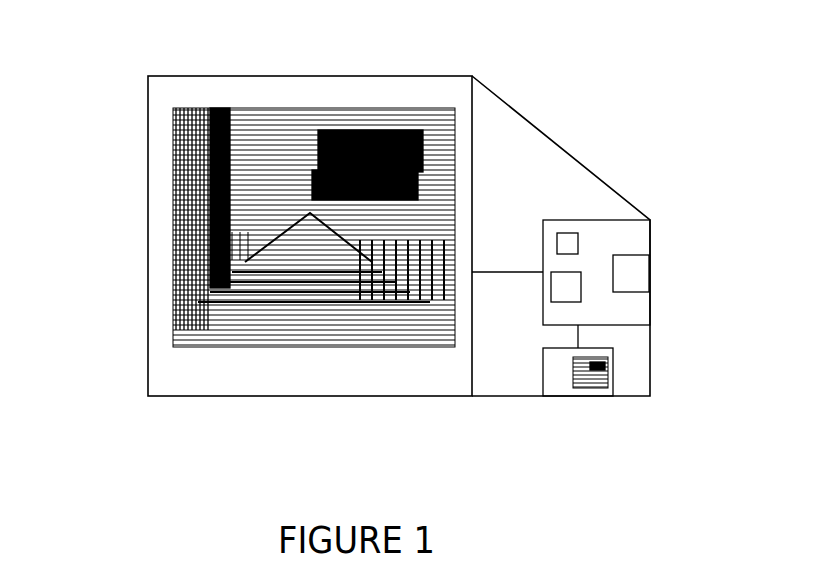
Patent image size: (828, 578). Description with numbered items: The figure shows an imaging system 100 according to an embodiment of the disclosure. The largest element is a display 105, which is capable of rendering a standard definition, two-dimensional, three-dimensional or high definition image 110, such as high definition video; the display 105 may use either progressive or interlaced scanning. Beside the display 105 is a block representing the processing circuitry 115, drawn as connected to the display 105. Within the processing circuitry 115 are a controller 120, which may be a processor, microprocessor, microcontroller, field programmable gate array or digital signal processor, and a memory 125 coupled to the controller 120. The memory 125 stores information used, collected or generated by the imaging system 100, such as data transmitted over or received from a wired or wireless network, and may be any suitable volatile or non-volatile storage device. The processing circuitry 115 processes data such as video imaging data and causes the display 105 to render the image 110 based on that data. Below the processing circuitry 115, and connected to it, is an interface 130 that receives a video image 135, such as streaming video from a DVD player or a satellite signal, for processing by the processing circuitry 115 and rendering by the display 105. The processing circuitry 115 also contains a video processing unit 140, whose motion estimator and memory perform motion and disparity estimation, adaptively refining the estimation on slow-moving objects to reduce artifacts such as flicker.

The imaging system 100 is at (131, 73).
The display 105 is at (145, 379).
The high definition image 110 is at (172, 267).
The processing circuitry 115 is at (615, 215).
The controller 120 is at (636, 255).
The memory 125 is at (569, 232).
The interface 130 is at (543, 381).
The video image 135 is at (610, 374).
The video processing unit 140 is at (551, 297).